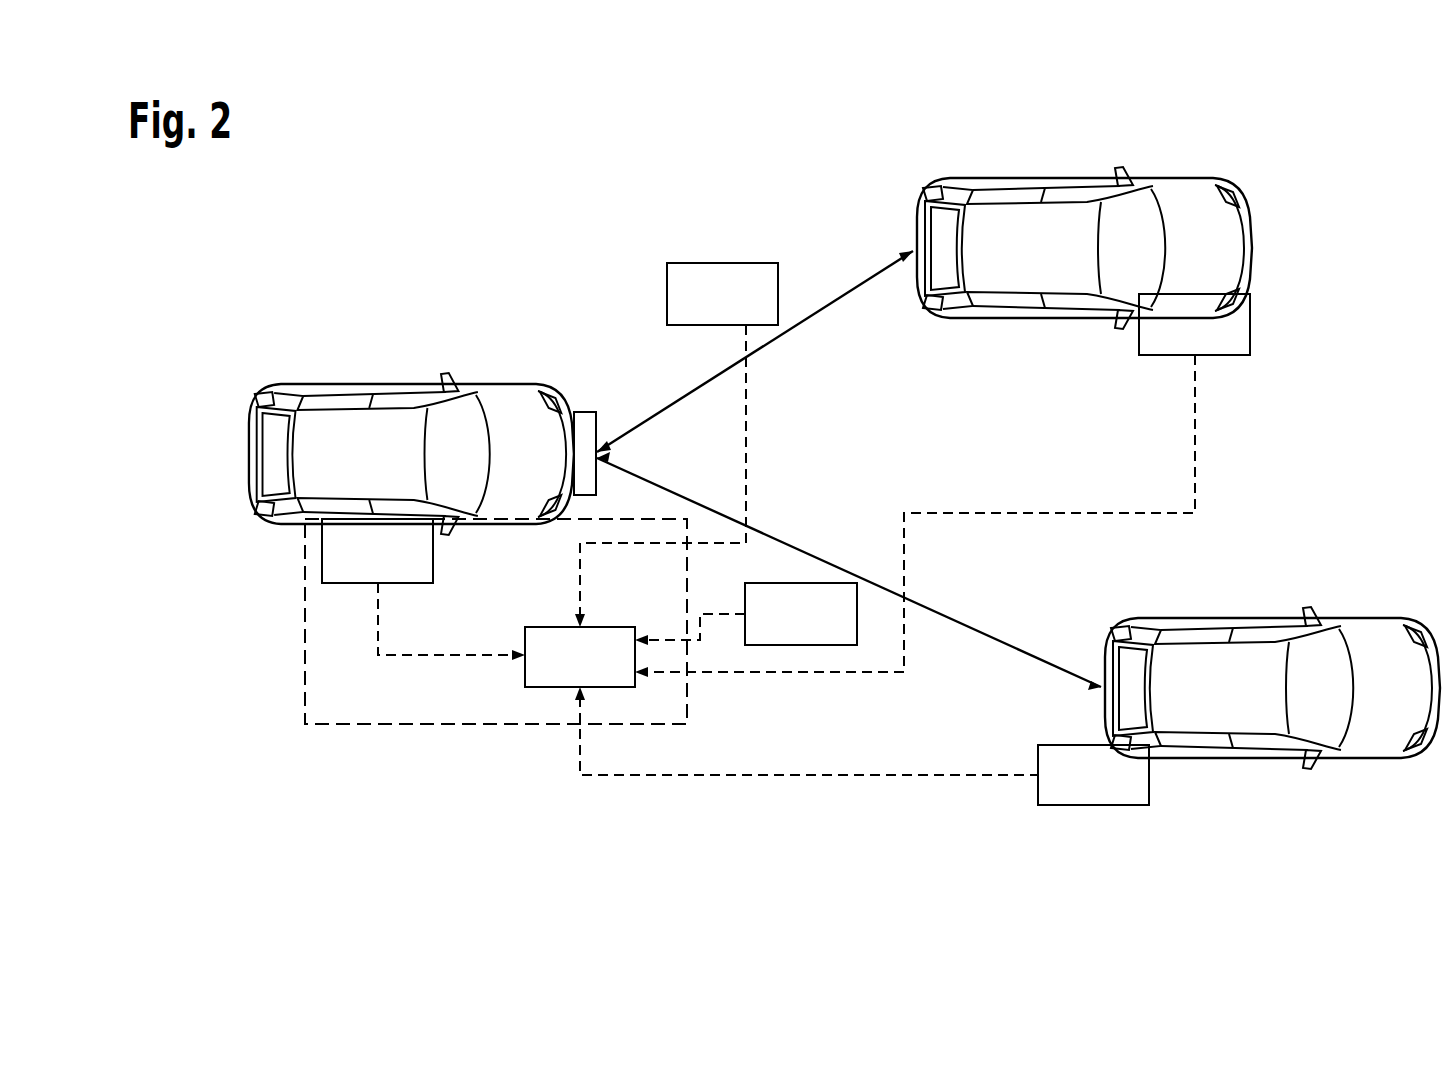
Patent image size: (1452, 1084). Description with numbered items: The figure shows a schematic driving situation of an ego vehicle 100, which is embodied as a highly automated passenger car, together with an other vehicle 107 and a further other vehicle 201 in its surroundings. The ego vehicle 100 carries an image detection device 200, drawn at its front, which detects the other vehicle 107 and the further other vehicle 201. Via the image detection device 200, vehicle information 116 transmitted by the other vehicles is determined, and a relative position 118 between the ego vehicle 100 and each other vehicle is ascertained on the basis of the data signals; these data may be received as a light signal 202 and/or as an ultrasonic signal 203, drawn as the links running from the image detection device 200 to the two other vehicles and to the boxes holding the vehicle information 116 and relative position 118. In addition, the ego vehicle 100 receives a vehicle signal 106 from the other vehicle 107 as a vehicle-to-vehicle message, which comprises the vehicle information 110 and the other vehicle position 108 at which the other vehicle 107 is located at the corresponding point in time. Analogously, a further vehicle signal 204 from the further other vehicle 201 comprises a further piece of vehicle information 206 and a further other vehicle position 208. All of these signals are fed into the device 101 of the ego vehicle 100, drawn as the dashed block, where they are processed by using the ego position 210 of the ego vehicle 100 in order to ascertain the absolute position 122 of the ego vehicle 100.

The ego vehicle 100 is at (383, 368).
The device 101 is at (483, 725).
The vehicle signal 106 is at (1195, 440).
The other vehicle 107 is at (1284, 189).
The vehicle position 108 is at (1278, 324).
The vehicle information 110 is at (1250, 322).
The vehicle information 116 is at (686, 502).
The relative position 118 is at (667, 293).
The absolute position 122 is at (525, 646).
The image detection device 200 is at (583, 412).
The further other vehicle 201 is at (1262, 790).
The light signal 202 is at (840, 297).
The ultrasonic signal 203 is at (746, 433).
The further vehicle signal 204 is at (815, 776).
The further piece of vehicle information 206 is at (1093, 823).
The further other vehicle position 208 is at (1093, 805).
The ego position 210 is at (322, 557).